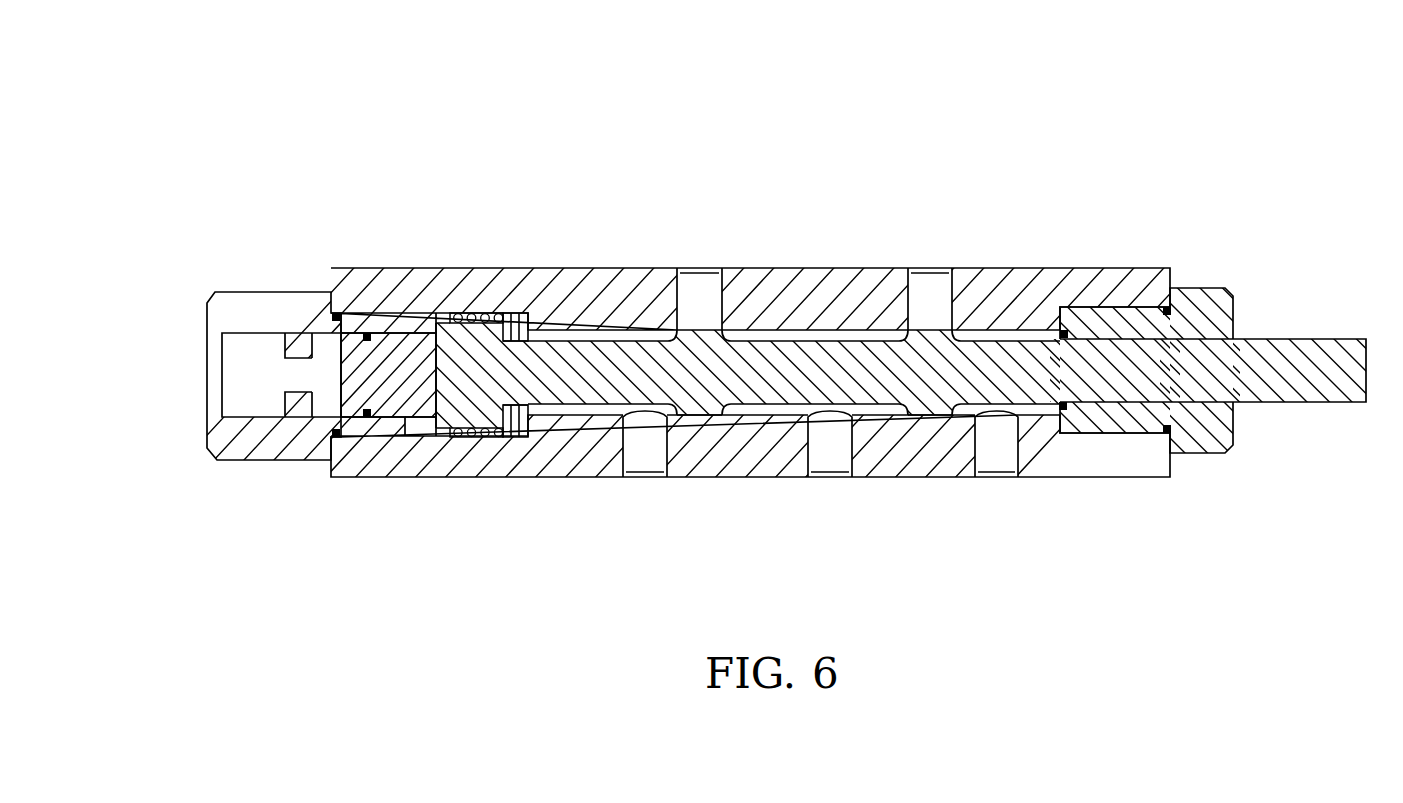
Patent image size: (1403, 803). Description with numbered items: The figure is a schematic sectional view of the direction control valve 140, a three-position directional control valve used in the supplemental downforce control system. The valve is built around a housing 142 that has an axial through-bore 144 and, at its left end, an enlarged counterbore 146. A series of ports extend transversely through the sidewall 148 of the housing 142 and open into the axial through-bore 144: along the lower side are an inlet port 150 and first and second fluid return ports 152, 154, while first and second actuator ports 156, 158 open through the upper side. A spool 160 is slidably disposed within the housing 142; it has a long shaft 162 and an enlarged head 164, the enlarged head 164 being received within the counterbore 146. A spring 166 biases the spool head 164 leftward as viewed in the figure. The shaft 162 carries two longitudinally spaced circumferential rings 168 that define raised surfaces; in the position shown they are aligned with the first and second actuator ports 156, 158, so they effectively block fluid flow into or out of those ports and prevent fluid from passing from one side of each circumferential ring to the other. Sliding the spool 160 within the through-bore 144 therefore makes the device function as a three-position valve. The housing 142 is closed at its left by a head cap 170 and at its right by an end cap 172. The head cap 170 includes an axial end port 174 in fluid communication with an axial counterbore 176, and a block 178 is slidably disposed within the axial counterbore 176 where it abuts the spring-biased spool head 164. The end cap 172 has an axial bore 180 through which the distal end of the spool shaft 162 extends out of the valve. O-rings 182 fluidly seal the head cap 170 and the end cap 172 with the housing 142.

The direction control valve 140 is at (1030, 99).
The housing 142 is at (1021, 268).
The axial through-bore 144 is at (572, 410).
The enlarged counterbore 146 is at (420, 430).
The sidewall 148 is at (493, 478).
The inlet port 150 is at (832, 477).
The first fluid return port 152 is at (648, 477).
The second fluid return port 154 is at (997, 477).
The first actuator port 156 is at (705, 268).
The second actuator port 158 is at (937, 268).
The spool 160 is at (775, 352).
The shaft 162 is at (1303, 387).
The enlarged head 164 is at (464, 342).
The spring 166 is at (514, 320).
The circumferential rings 168 is at (663, 323).
The head cap 170 is at (228, 293).
The end cap 172 is at (1227, 288).
The axial end port 174 is at (228, 366).
The axial counterbore 176 is at (320, 407).
The block 178 is at (396, 350).
The axial bore 180 is at (1202, 403).
The O-rings 182 is at (1168, 433).